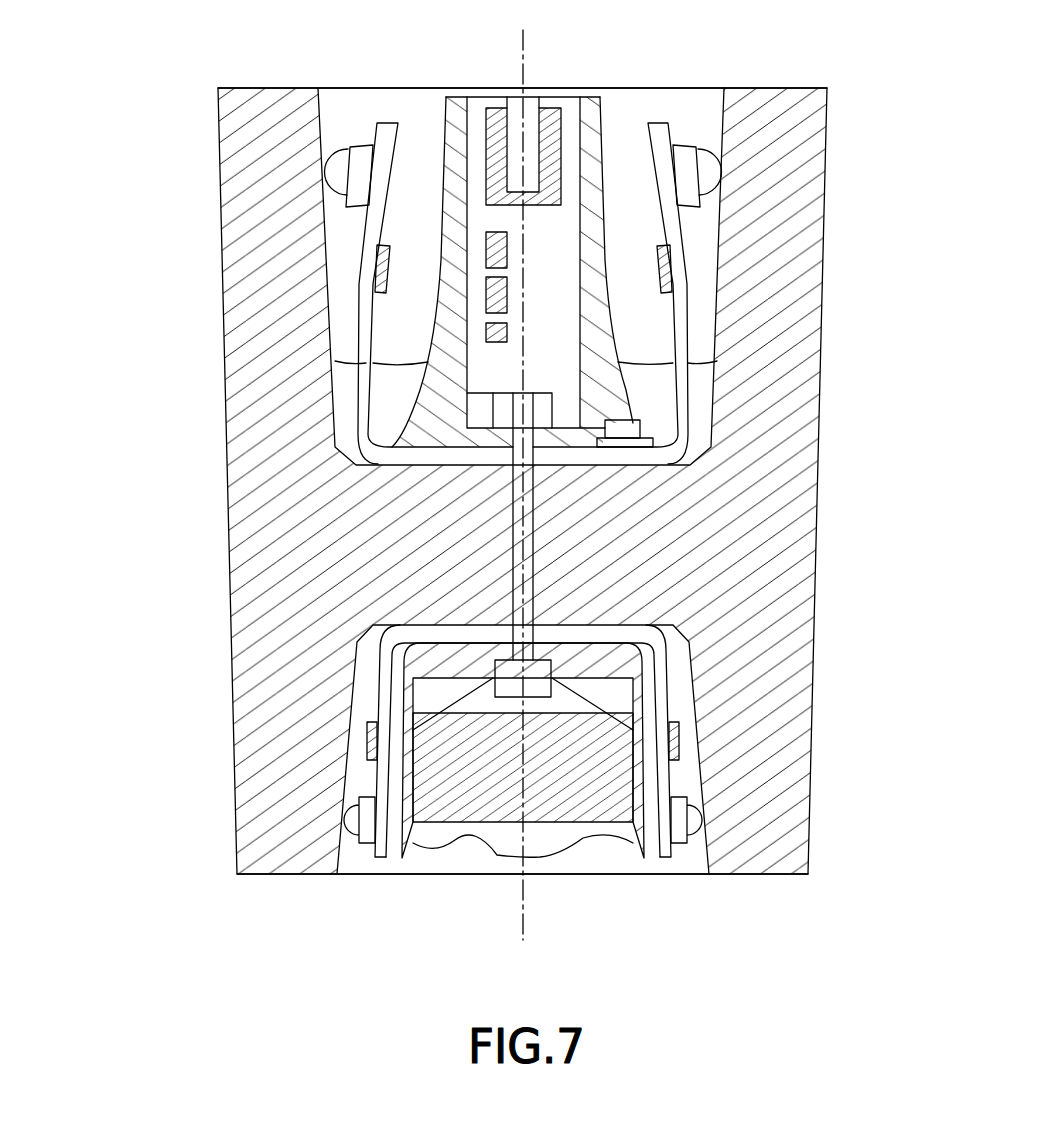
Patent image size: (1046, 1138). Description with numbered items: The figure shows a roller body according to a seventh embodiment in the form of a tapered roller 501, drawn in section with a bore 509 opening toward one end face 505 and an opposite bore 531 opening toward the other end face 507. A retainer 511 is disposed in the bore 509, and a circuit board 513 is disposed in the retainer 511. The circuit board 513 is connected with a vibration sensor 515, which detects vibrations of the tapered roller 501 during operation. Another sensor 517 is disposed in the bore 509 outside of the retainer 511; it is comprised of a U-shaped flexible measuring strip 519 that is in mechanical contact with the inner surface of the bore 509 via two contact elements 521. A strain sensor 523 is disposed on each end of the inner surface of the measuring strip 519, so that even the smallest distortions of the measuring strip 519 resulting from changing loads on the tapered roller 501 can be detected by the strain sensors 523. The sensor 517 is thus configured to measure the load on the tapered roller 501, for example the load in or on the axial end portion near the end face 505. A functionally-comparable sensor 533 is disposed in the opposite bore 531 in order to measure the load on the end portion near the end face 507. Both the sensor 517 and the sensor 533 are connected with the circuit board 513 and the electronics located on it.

The tapered roller 501 is at (178, 193).
The end face 505 is at (260, 88).
The end face 507 is at (283, 876).
The bore 509 is at (353, 84).
The retainer 511 is at (458, 108).
The circuit board 513 is at (475, 125).
The vibration sensor 515 is at (638, 428).
The sensor 517 is at (627, 157).
The U-shaped flexible measuring strip 519 is at (370, 337).
The contact element 521 is at (338, 170).
The strain sensor 523 is at (380, 272).
The opposite bore 531 is at (362, 861).
The sensor 533 is at (684, 861).